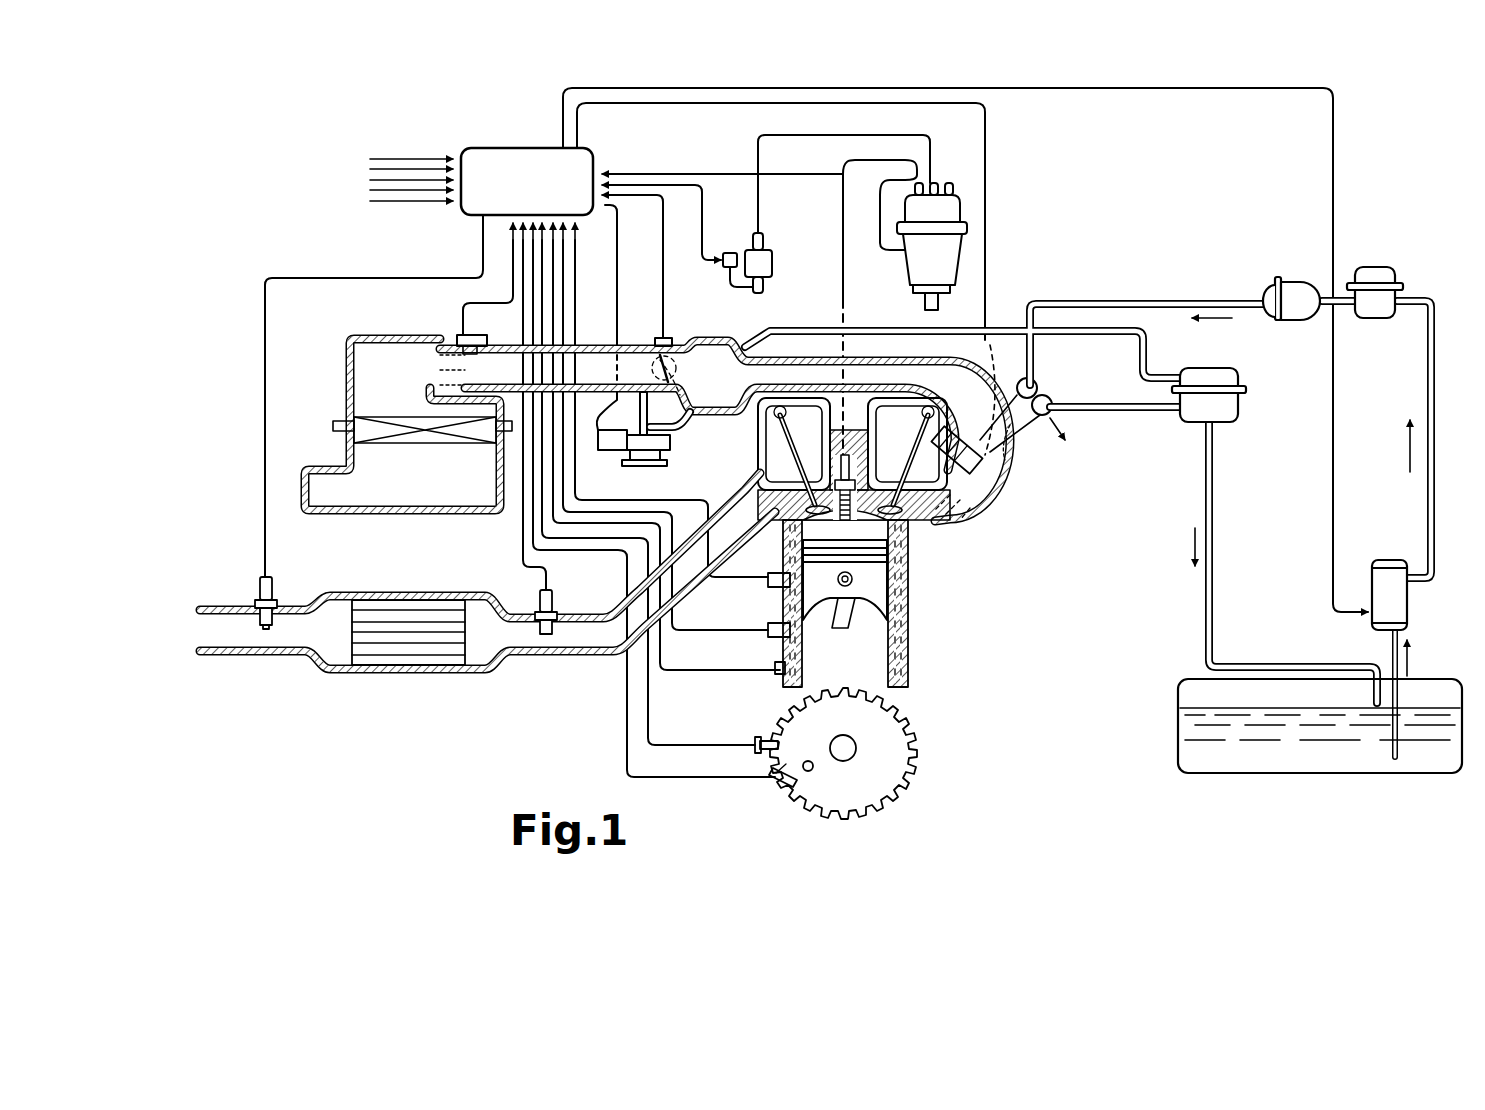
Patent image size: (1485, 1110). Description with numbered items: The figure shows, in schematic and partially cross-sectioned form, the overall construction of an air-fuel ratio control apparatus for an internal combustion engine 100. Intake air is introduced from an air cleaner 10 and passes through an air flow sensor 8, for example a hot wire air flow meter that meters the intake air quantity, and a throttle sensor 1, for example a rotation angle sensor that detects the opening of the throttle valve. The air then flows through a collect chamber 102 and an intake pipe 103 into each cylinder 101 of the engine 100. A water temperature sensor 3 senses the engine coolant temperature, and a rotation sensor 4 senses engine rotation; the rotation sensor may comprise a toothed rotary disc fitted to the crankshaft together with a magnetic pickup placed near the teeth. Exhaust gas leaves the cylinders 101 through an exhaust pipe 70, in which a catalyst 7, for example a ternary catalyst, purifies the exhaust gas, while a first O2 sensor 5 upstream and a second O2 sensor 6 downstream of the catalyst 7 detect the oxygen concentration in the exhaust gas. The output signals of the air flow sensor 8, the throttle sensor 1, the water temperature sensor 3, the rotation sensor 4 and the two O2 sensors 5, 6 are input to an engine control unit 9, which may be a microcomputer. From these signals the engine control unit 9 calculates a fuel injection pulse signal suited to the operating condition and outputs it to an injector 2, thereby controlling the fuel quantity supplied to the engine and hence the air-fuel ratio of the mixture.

The throttle sensor 1 is at (660, 338).
The injector 2 is at (968, 478).
The water temperature sensor 3 is at (778, 665).
The rotation sensor 4 is at (773, 740).
The first O2 sensor 5 is at (540, 602).
The second O2 sensor 6 is at (258, 592).
The catalyst 7 is at (411, 655).
The air flow sensor 8 is at (457, 335).
The engine control unit 9 is at (510, 150).
The air cleaner 10 is at (430, 516).
The exhaust pipe 70 is at (256, 656).
The internal combustion engine 100 is at (914, 576).
The cylinder 101 is at (880, 630).
The collect chamber 102 is at (712, 350).
The intake pipe 103 is at (1008, 455).